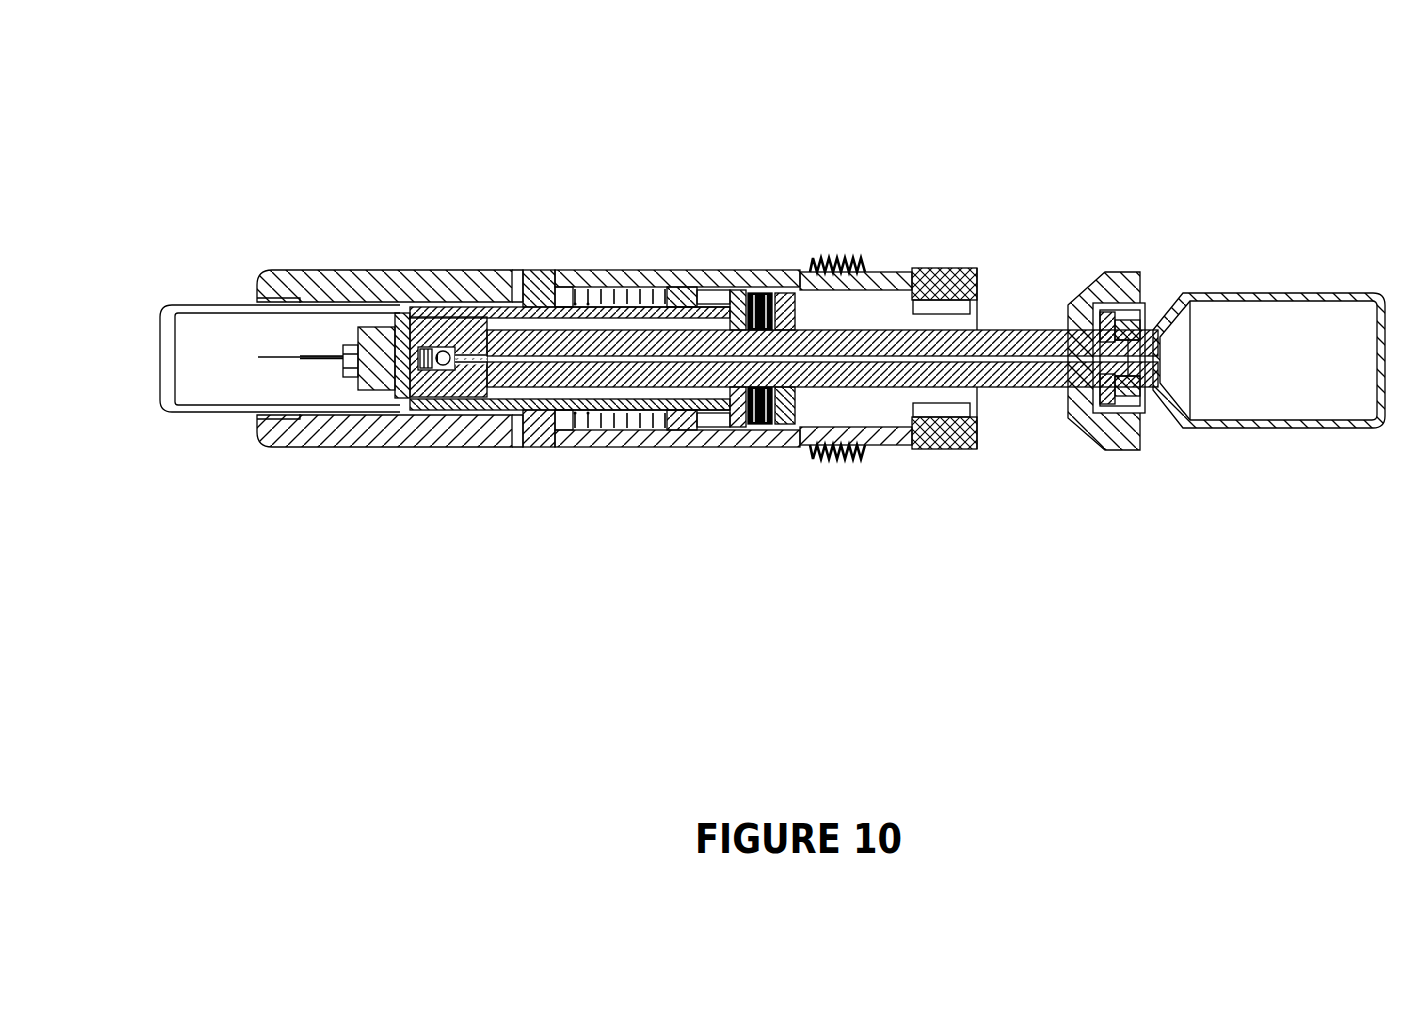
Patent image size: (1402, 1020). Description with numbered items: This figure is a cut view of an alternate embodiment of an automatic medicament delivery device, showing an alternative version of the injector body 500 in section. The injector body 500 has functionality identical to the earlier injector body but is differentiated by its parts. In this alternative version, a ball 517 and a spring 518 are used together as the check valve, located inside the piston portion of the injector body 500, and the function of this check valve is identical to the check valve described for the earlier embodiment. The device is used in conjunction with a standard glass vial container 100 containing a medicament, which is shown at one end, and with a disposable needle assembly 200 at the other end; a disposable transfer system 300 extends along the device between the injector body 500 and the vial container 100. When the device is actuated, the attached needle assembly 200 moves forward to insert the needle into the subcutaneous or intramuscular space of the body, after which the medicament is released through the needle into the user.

The glass vial container 100 is at (1219, 292).
The needle assembly 200 is at (406, 340).
The disposable transfer system 300 is at (1022, 330).
The injector body 500 is at (572, 394).
The ball 517 is at (427, 366).
The spring 518 is at (495, 477).